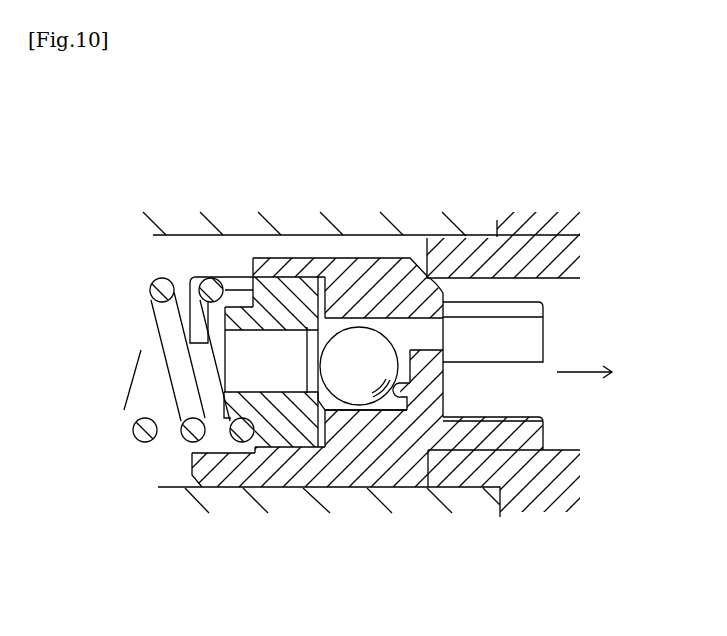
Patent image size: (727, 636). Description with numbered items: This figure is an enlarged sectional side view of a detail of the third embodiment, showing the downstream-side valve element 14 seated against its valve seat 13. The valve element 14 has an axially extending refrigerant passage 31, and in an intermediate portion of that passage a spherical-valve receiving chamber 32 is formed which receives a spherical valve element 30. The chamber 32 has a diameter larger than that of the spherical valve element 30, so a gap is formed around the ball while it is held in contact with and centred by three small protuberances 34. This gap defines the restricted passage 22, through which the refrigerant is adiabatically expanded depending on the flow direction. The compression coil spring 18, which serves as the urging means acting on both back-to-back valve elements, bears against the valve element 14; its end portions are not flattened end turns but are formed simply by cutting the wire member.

The valve seat 13 is at (448, 262).
The valve element 14 is at (331, 257).
The restricted passage 22 is at (360, 318).
The compression coil spring 18 is at (143, 442).
The spherical valve element 30 is at (352, 392).
The refrigerant passage 31 is at (273, 393).
The spherical-valve receiving chamber 32 is at (375, 410).
The small protuberance 34 is at (405, 392).